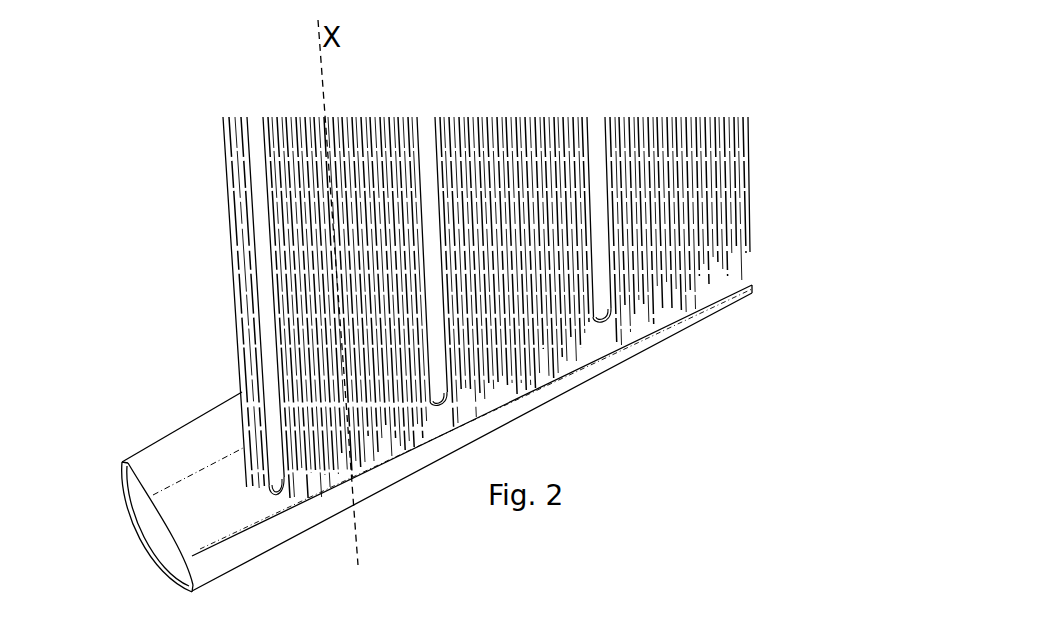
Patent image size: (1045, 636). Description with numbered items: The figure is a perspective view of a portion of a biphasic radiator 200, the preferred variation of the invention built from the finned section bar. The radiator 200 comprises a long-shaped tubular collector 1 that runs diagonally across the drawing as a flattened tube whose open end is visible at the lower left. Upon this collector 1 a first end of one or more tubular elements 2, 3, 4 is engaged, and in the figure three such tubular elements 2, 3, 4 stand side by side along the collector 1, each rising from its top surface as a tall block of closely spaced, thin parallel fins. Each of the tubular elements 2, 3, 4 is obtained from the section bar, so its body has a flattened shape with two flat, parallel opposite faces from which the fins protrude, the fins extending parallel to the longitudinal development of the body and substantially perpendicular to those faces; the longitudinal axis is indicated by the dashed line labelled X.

The biphasic radiator 200 is at (178, 78).
The tubular collector 1 is at (158, 452).
The tubular element 2 is at (237, 163).
The tubular element 3 is at (480, 125).
The tubular element 4 is at (652, 125).